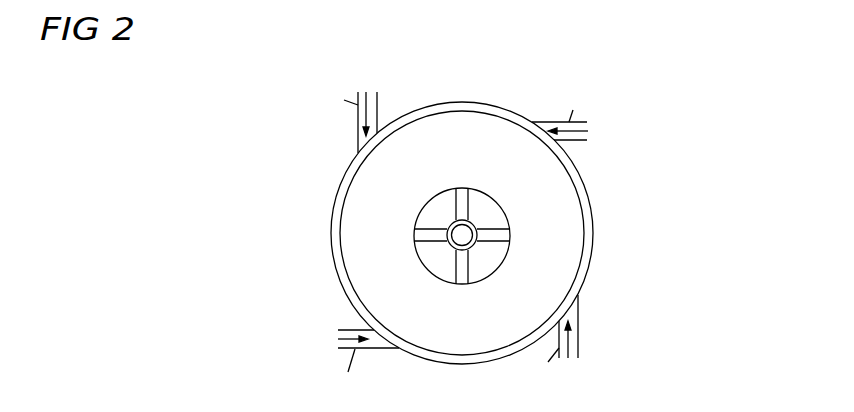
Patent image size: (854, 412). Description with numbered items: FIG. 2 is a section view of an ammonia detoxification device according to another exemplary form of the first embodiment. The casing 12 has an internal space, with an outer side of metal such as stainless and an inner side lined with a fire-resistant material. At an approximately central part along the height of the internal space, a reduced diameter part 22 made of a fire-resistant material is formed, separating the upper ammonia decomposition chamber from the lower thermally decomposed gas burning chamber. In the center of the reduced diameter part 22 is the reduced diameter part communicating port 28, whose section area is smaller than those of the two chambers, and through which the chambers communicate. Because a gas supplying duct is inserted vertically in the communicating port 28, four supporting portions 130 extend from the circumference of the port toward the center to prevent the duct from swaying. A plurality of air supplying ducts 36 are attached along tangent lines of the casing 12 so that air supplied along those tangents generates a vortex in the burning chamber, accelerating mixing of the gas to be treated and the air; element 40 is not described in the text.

The casing 12 is at (455, 102).
The reduced diameter part 22 is at (378, 253).
The reduced diameter part communicating port 28 is at (631, 204).
The air supplying duct 36 is at (357, 146).
The central hub 40 is at (450, 224).
The supporting portion 130 is at (460, 272).